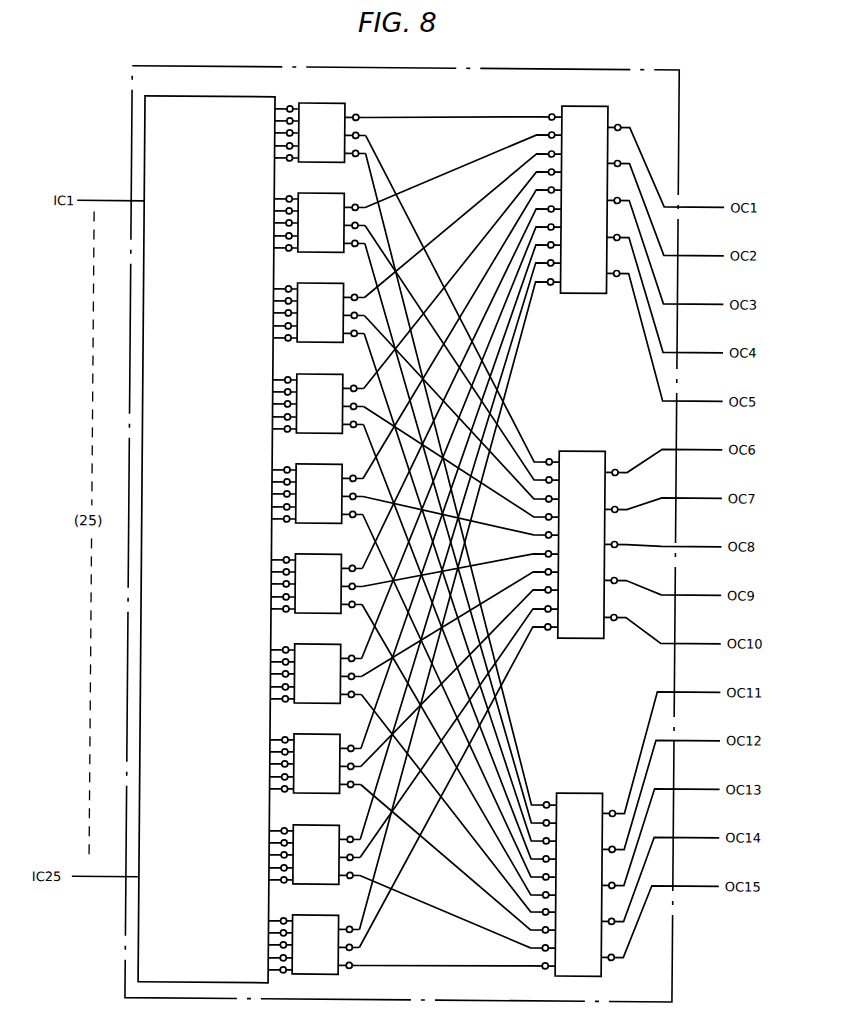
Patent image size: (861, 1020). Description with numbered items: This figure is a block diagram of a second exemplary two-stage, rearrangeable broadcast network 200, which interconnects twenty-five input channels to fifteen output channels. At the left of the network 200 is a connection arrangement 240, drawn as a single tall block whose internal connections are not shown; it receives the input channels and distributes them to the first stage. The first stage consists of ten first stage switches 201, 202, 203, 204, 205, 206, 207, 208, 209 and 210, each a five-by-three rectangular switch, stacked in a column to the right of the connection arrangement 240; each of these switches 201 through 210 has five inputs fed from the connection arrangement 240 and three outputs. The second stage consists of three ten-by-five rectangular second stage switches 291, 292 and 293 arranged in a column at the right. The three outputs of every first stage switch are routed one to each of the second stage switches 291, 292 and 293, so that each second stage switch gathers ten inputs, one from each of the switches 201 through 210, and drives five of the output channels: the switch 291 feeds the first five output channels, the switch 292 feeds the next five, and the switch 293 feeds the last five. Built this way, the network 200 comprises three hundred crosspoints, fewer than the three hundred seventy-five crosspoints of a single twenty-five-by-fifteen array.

The two-stage, rearrangeable broadcast network 200 is at (645, 55).
The connection arrangement 240 is at (219, 97).
The first stage switch 201 is at (322, 103).
The first stage switch 202 is at (322, 193).
The first stage switch 203 is at (322, 283).
The first stage switch 204 is at (322, 374).
The first stage switch 205 is at (322, 464).
The first stage switch 206 is at (322, 554).
The first stage switch 207 is at (322, 644).
The first stage switch 208 is at (322, 734).
The first stage switch 209 is at (322, 825).
The first stage switch 210 is at (322, 915).
The second stage switch 291 is at (578, 104).
The second stage switch 292 is at (578, 449).
The second stage switch 293 is at (574, 791).